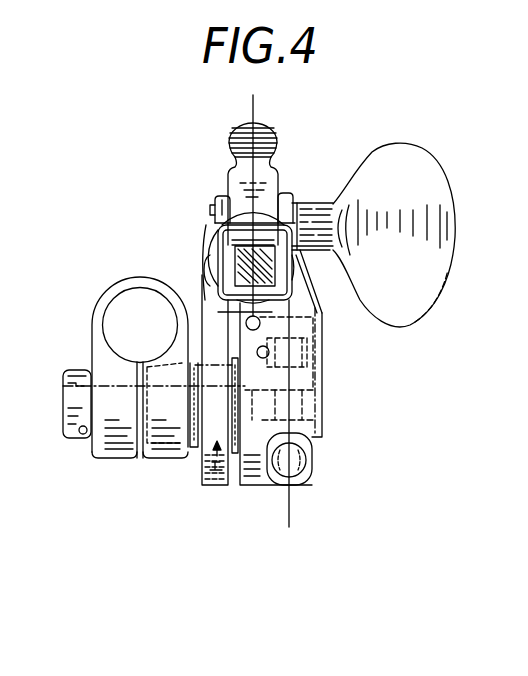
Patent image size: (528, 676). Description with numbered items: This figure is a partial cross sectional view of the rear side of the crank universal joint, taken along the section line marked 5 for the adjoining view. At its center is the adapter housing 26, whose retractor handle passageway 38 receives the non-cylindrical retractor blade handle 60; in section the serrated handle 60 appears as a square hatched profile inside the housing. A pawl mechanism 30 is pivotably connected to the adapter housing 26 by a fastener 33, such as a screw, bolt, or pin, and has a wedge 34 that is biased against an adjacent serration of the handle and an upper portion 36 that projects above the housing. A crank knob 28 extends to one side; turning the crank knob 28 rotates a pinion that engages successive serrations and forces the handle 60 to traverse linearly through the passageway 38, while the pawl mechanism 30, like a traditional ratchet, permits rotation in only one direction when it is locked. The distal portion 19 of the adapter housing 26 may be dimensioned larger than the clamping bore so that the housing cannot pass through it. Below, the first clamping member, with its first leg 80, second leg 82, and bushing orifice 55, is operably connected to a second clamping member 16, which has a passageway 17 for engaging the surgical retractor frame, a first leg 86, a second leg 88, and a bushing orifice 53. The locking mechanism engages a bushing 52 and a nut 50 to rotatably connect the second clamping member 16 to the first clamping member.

The section line 5- 5 is at (218, 103).
The second clamping member 16 is at (100, 298).
The passageway 17 is at (130, 306).
The distal portion 19 is at (322, 313).
The adapter housing 26 is at (209, 279).
The crank knob 28 is at (410, 140).
The pawl mechanism 30 is at (283, 168).
The fastener 33 is at (219, 198).
The wedge 34 is at (247, 237).
The upper portion 36 is at (229, 130).
The retractor handle passageway 38 is at (284, 291).
The nut 50 is at (73, 442).
The bushing 52 is at (193, 449).
The bushing orifice 53 is at (184, 358).
The bushing orifice 55 is at (213, 492).
The non-cylindrical retractor blade handle 60 is at (237, 272).
The first leg 80 is at (248, 490).
The second leg 82 is at (207, 490).
The first leg 86 is at (166, 461).
The second leg 88 is at (116, 461).